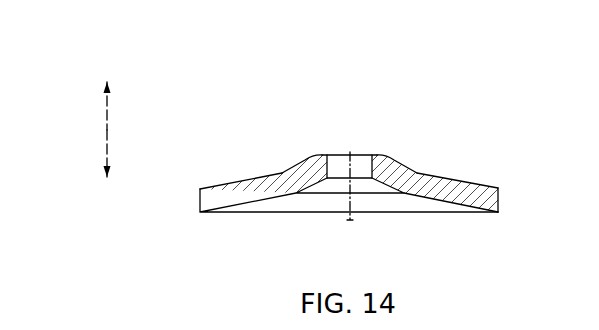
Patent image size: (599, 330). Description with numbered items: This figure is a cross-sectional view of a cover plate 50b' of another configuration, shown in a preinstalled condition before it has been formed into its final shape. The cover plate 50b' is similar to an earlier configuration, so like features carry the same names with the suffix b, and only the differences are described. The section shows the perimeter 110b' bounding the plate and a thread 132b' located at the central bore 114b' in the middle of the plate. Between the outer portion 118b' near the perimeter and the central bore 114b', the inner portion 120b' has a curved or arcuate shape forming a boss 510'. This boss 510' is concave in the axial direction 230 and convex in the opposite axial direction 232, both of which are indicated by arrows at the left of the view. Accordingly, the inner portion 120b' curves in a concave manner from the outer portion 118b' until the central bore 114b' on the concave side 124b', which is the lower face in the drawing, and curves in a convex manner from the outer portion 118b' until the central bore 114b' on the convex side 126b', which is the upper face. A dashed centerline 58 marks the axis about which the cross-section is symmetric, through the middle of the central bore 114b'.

The perimeter 110b' is at (295, 204).
The convex side 126b' is at (217, 153).
The boss 510' is at (279, 125).
The thread 132b' is at (332, 96).
The central bore 114b' is at (362, 101).
The inner portion 120b' is at (426, 121).
The cover plate 50b' is at (477, 142).
The outer portion 118b' is at (537, 168).
The concave side 124b' is at (475, 231).
The central axis 58 is at (353, 220).
The opposite axial direction 232 is at (103, 107).
The axial direction 230 is at (103, 153).